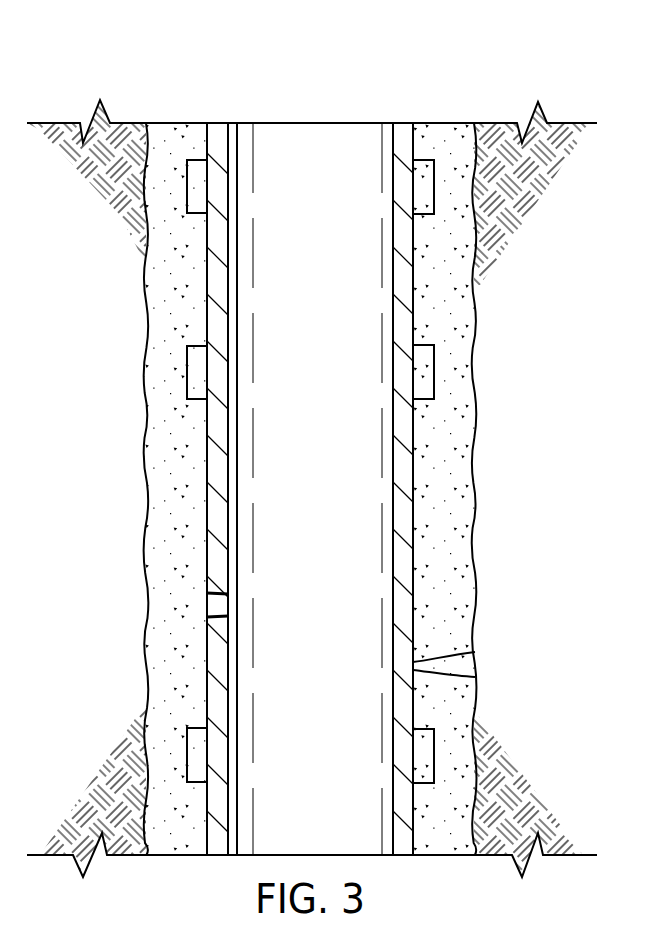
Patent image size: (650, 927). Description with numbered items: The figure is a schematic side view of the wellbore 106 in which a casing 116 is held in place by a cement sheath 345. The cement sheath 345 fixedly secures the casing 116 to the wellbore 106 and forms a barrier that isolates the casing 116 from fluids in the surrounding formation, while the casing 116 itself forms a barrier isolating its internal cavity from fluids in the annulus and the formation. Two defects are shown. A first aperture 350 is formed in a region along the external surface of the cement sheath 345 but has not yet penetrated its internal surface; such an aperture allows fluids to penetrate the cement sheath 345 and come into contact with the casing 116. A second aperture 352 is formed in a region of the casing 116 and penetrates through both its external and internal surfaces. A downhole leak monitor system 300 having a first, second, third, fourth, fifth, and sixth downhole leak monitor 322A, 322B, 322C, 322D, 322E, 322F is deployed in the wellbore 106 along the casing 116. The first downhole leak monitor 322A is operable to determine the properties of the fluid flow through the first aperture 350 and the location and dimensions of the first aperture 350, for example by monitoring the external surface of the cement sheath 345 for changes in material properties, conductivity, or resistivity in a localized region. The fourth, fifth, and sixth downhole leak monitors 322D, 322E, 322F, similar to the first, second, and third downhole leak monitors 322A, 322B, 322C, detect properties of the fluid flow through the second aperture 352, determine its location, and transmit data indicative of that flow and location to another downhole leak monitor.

The downhole leak monitor system 300 is at (312, 444).
The casing 116 is at (217, 142).
The wellbore 106 is at (477, 320).
The cement sheath 345 is at (462, 480).
The first aperture 350 is at (460, 672).
The second aperture 352 is at (223, 603).
The first downhole leak monitor 322A is at (427, 753).
The second downhole leak monitor 322B is at (425, 380).
The third downhole leak monitor 322C is at (427, 190).
The fourth downhole leak monitor 322D is at (197, 748).
The fifth downhole leak monitor 322E is at (197, 372).
The sixth downhole leak monitor 322F is at (197, 187).